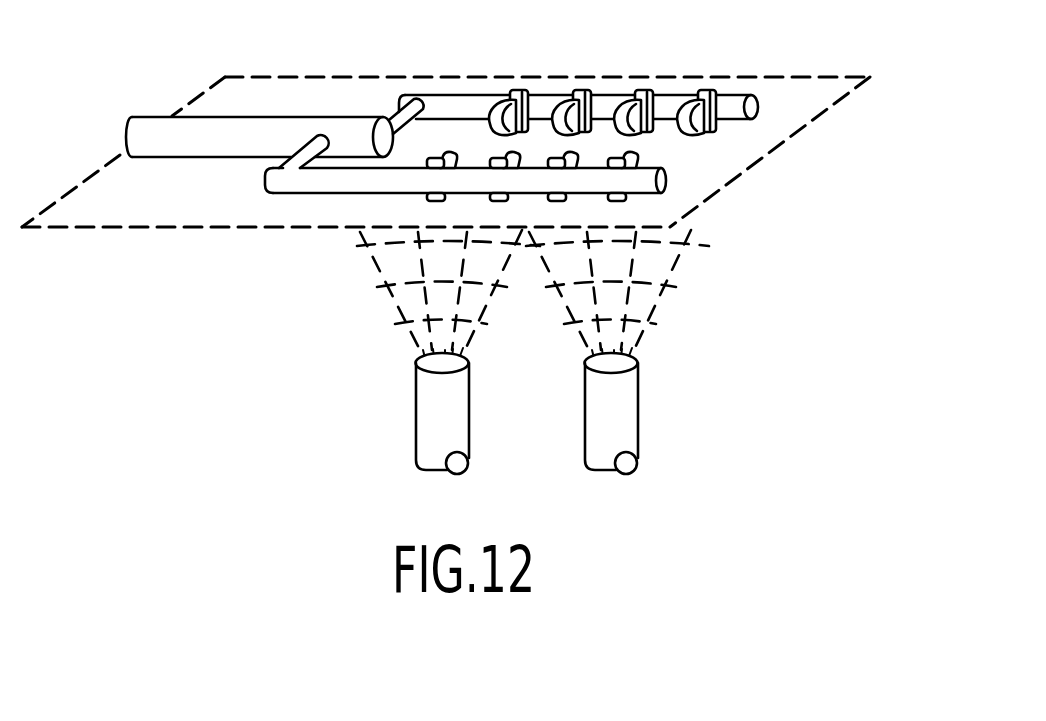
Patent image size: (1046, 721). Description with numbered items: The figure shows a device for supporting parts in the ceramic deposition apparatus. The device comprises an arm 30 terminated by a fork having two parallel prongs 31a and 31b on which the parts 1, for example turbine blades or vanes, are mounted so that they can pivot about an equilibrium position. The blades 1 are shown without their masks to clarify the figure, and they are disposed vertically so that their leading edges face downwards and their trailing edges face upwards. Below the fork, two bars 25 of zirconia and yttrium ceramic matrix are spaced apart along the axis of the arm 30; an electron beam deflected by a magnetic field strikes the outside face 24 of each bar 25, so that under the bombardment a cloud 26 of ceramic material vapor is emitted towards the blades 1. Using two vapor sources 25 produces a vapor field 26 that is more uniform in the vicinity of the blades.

The parts 1 is at (503, 153).
The arm 30 is at (203, 141).
The prong 31a is at (735, 100).
The prong 31b is at (664, 186).
The cloud of ceramic material vapor 26 is at (388, 299).
The outside face 24 is at (597, 352).
The bar 25 is at (422, 420).